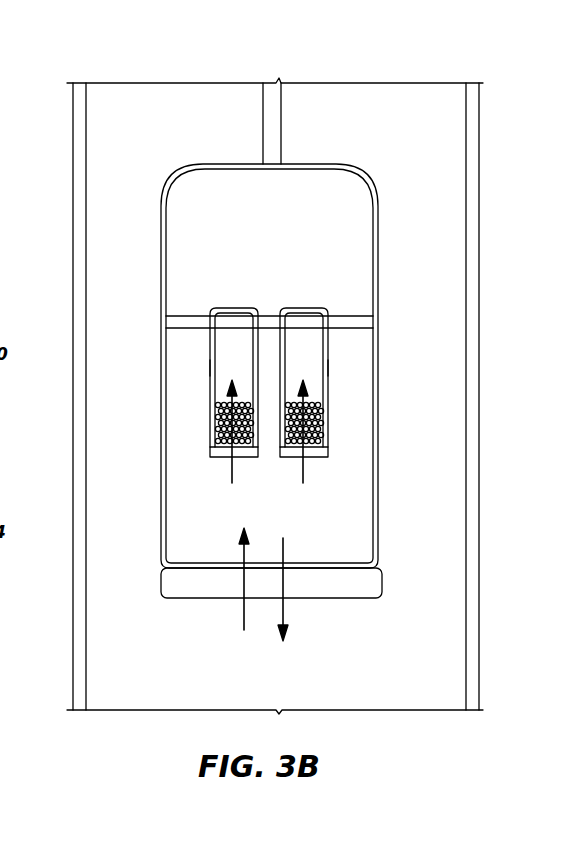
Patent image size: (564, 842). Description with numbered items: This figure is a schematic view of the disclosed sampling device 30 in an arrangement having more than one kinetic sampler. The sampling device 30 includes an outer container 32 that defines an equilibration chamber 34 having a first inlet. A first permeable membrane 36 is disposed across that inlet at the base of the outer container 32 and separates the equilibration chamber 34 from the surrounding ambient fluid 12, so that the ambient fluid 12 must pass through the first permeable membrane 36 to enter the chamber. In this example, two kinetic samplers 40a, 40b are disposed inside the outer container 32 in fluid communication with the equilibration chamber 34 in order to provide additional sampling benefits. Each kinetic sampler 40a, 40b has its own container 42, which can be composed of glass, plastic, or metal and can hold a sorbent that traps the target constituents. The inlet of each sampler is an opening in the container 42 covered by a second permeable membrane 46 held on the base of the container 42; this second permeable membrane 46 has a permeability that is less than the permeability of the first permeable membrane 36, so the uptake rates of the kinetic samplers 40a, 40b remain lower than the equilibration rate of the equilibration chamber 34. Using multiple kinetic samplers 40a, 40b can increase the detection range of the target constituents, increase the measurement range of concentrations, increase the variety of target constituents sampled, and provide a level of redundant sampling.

The sampling device 30 is at (485, 74).
The ambient fluid 12 is at (110, 133).
The outer container 32 is at (160, 350).
The equilibration chamber 34 is at (376, 496).
The first permeable membrane 36 is at (162, 598).
The kinetic sampler 40a is at (221, 393).
The kinetic sampler 40b is at (317, 393).
The container 42 is at (209, 368).
The second permeable membrane 46 is at (212, 452).